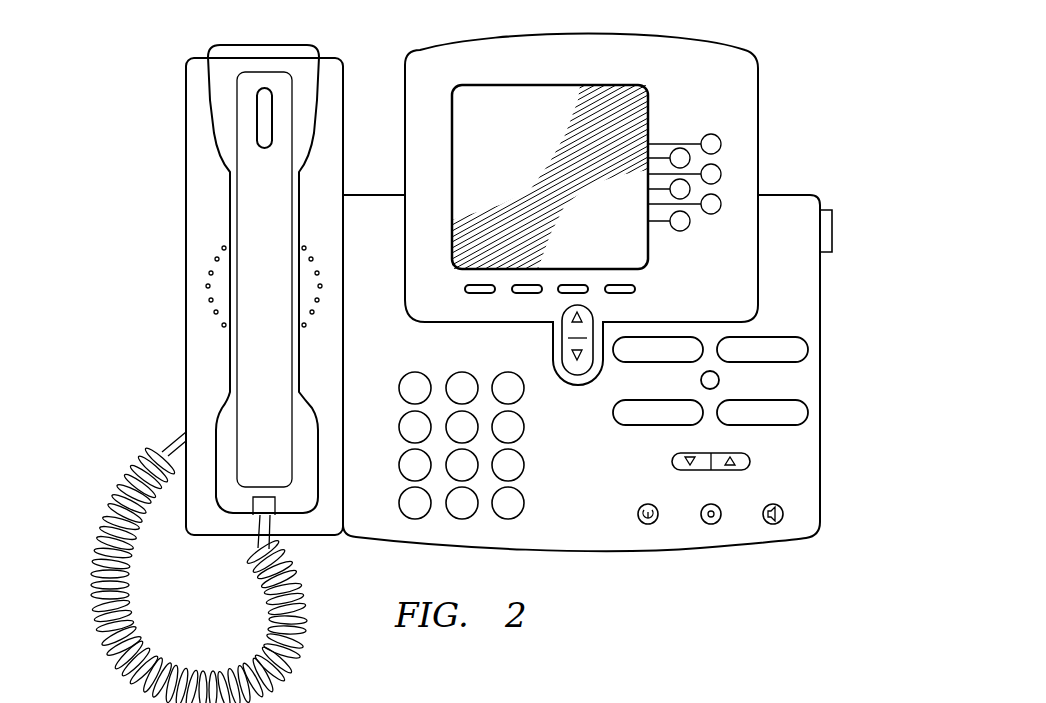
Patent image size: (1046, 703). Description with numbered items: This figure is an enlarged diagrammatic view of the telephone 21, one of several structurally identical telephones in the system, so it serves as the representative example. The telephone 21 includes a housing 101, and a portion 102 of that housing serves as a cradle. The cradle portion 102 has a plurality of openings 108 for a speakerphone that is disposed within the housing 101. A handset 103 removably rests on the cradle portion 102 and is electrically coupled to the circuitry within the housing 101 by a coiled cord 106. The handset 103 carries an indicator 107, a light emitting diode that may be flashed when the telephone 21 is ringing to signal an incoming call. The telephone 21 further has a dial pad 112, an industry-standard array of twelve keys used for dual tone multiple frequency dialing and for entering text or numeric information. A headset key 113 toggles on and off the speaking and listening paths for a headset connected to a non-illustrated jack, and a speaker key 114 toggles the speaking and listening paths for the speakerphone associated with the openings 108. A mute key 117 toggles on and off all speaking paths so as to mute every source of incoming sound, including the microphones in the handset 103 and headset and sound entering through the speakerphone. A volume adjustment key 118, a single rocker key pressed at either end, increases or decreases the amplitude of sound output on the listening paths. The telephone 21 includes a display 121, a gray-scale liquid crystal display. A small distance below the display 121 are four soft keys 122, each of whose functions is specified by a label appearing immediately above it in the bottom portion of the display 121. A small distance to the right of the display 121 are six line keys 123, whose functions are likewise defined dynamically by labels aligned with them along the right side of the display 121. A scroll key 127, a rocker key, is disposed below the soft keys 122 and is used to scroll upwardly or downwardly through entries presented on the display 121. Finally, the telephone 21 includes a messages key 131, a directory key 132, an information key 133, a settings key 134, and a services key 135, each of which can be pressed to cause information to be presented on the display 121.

The telephone 21 is at (798, 62).
The housing 101 is at (822, 297).
The cradle portion 102 is at (192, 153).
The handset 103 is at (263, 50).
The coiled cord 106 is at (100, 572).
The indicator 107 is at (265, 150).
The openings 108 is at (207, 287).
The dial pad 112 is at (440, 520).
The headset key 113 is at (637, 517).
The speaker key 114 is at (780, 525).
The mute key 117 is at (711, 525).
The volume adjustment key 118 is at (752, 461).
The display 121 is at (548, 97).
The soft keys 122 is at (655, 290).
The line keys 123 is at (692, 122).
The scroll key 127 is at (580, 377).
The messages key 131 is at (668, 364).
The directory key 132 is at (812, 350).
The information key 133 is at (722, 380).
The settings key 134 is at (812, 412).
The services key 135 is at (646, 425).